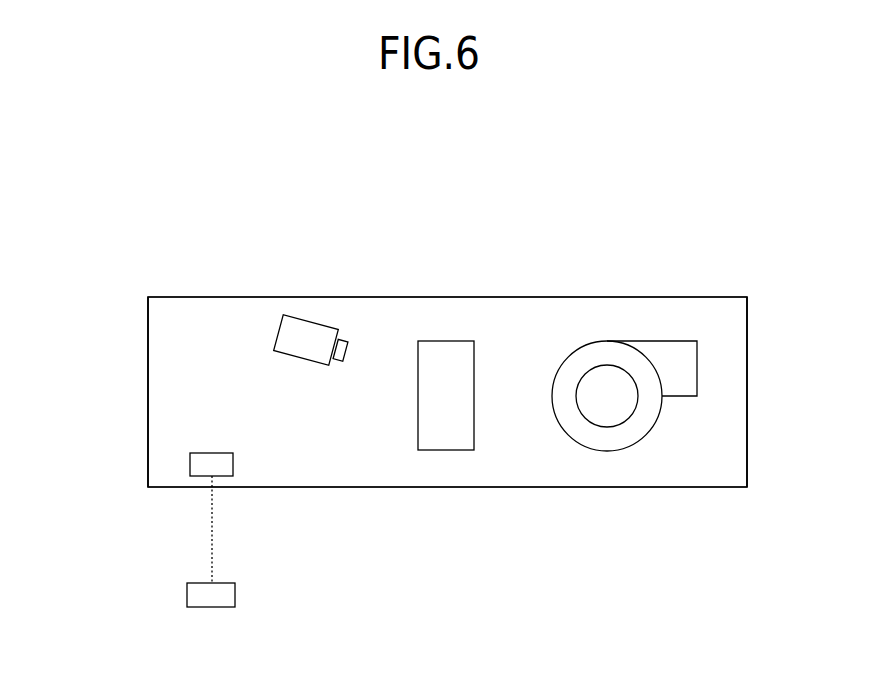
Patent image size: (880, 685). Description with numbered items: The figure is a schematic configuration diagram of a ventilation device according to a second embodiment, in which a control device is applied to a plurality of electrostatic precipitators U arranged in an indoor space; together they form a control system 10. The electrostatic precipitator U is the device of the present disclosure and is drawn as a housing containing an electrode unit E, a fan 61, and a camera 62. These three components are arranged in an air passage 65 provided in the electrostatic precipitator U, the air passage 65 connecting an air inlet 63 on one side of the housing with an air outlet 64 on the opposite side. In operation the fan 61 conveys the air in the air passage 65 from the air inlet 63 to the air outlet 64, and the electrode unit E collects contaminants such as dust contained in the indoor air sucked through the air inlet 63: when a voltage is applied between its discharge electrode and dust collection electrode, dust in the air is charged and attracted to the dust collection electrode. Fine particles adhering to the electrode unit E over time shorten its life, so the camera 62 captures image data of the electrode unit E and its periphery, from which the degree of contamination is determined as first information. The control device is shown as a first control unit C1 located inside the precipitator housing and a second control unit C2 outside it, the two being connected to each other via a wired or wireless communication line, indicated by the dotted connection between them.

The control system 10 is at (576, 172).
The electrostatic precipitator U is at (339, 297).
The fan 61 is at (610, 342).
The camera 62 is at (302, 358).
The air inlet 63 is at (147, 395).
The air outlet 64 is at (748, 375).
The air passage 65 is at (338, 461).
The electrode unit E is at (453, 450).
The first control unit C1 is at (190, 467).
The second control unit C2 is at (187, 598).